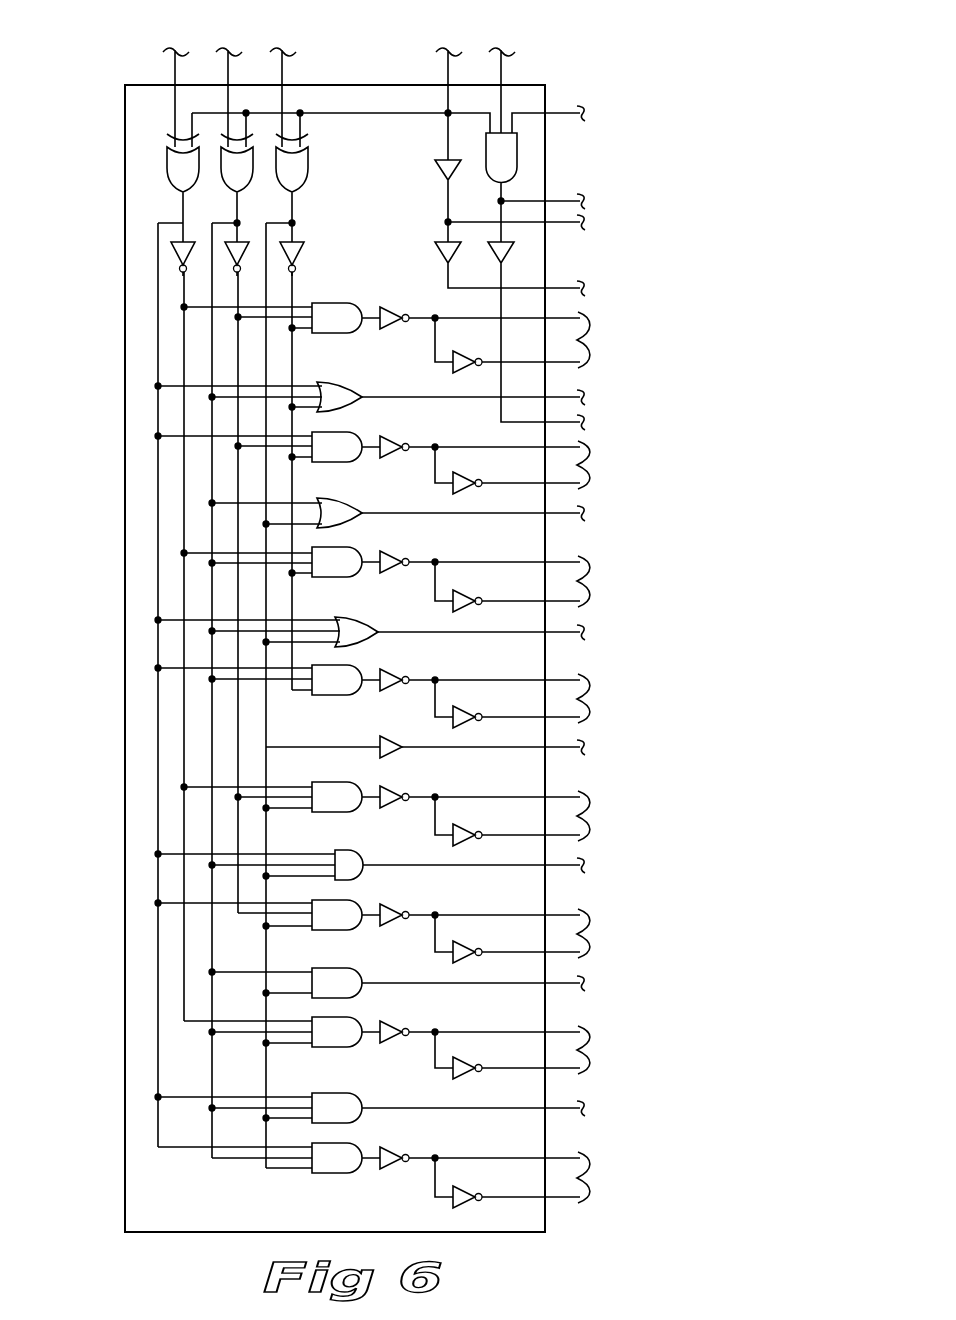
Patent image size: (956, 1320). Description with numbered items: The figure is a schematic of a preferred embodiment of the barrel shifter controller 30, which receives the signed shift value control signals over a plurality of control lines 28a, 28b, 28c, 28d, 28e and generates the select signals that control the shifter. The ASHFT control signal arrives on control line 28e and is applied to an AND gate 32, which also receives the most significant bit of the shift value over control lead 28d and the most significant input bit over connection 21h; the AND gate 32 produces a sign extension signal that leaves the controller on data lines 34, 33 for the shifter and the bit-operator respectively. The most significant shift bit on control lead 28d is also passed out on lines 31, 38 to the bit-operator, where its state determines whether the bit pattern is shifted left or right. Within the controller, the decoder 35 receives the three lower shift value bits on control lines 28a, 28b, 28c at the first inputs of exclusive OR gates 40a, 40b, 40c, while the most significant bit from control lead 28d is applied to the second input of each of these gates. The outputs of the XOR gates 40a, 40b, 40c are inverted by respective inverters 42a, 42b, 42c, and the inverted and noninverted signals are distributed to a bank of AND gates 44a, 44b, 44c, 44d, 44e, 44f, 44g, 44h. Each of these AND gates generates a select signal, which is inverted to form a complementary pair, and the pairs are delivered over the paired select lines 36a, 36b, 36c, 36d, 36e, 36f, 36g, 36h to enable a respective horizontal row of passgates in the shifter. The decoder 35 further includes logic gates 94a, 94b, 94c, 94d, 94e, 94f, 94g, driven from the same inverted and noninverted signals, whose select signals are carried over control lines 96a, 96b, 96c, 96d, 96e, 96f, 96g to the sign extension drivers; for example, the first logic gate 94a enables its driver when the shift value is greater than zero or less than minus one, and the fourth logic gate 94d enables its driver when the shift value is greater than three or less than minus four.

The connection 21h is at (560, 113).
The control line 28a is at (175, 71).
The control line 28b is at (228, 71).
The control line 28c is at (282, 71).
The control lead 28d is at (448, 71).
The control line 28e is at (501, 71).
The barrel shifter controller 30 is at (120, 427).
The line 31 is at (563, 289).
The AND gate 32 is at (483, 142).
The data line 33 is at (563, 200).
The data line 34 is at (501, 412).
The decoder 35 is at (142, 645).
The select line 36a is at (608, 340).
The select line 36b is at (608, 465).
The select line 36c is at (608, 582).
The select line 36d is at (608, 699).
The select line 36e is at (608, 816).
The select line 36f is at (608, 934).
The select line 36g is at (608, 1050).
The select line 36h is at (608, 1178).
The line 38 is at (563, 224).
The exclusive (XOR) gate 40a is at (167, 163).
The exclusive (XOR) gate 40b is at (228, 183).
The exclusive (XOR) gate 40c is at (309, 160).
The inverter 42a is at (178, 253).
The inverter 42b is at (242, 240).
The inverter 42c is at (302, 256).
The AND gate 44a is at (330, 297).
The AND gate 44b is at (327, 462).
The AND gate 44c is at (327, 577).
The AND gate 44d is at (327, 695).
The AND gate 44e is at (327, 812).
The AND gate 44f is at (327, 930).
The AND gate 44g is at (327, 1047).
The AND gate 44h is at (332, 1175).
The logic gate 94a is at (342, 380).
The logic gate 94b is at (358, 524).
The logic gate 94c is at (368, 645).
The logic gate 94d is at (386, 757).
The logic gate 94e is at (360, 878).
The logic gate 94f is at (358, 996).
The logic gate 94g is at (360, 1122).
The control line 96a is at (568, 398).
The control line 96b is at (563, 517).
The control line 96c is at (563, 636).
The control line 96d is at (563, 751).
The control line 96e is at (563, 869).
The control line 96f is at (563, 987).
The control line 96g is at (563, 1112).